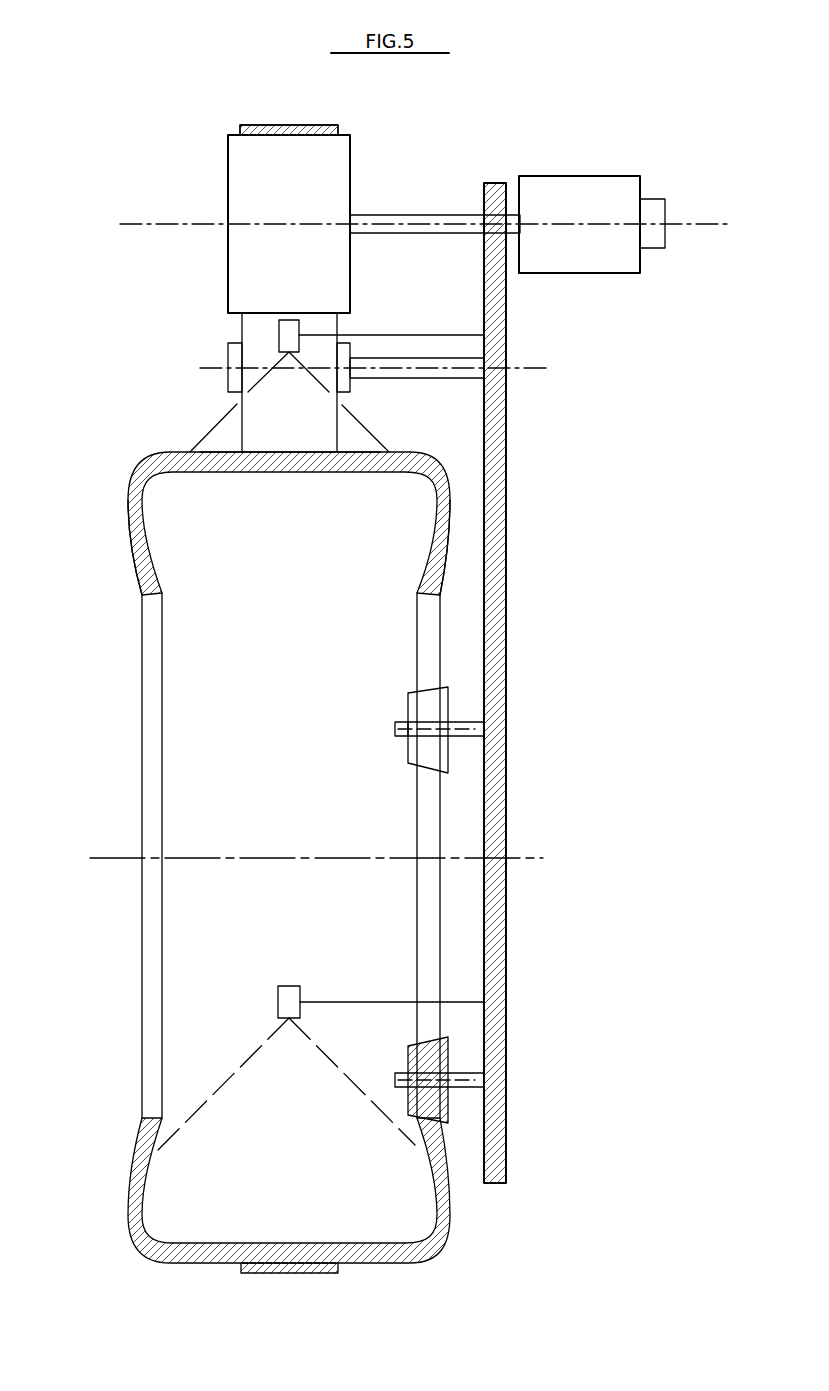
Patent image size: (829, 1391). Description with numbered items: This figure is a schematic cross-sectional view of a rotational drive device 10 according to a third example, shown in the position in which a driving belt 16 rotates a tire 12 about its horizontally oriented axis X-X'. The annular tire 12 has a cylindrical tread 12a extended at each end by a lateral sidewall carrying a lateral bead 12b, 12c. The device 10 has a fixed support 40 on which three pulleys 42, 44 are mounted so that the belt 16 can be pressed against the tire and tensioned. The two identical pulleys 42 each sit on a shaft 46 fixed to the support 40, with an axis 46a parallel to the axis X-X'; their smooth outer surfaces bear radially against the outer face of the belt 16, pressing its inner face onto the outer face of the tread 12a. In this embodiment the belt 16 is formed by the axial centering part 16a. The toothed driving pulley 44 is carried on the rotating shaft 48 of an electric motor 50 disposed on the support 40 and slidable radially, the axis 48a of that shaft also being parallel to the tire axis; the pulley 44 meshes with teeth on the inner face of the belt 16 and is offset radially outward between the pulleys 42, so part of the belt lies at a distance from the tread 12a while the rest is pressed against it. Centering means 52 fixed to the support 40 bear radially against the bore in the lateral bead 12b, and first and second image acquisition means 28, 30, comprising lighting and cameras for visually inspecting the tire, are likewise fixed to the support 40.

The device 10 is at (553, 475).
The tire 12 is at (173, 452).
The cylindrical tread 12a is at (292, 465).
The lateral bead 12b is at (428, 585).
The lateral bead 12c is at (150, 585).
The driving belt 16 is at (280, 125).
The axial centering part 16a is at (312, 126).
The first image acquisition means 28 is at (278, 1002).
The second image acquisition means 30 is at (279, 333).
The fixed support 40 is at (506, 612).
The pulleys 42 is at (228, 352).
The driving pulley 44 is at (228, 176).
The shaft 46 is at (440, 378).
The axis 46a is at (522, 367).
The rotating shaft 48 is at (424, 214).
The axis of the shaft of the motor 48a is at (704, 222).
The electric motor 50 is at (592, 216).
The centering means 52 is at (430, 757).